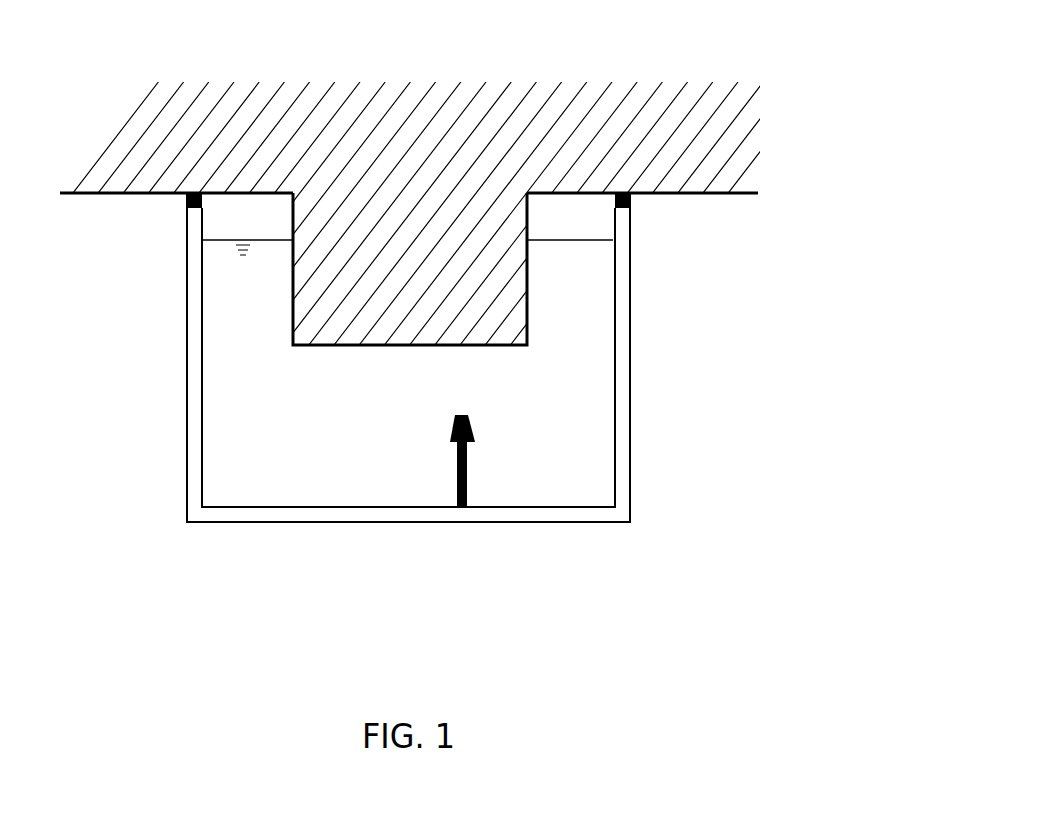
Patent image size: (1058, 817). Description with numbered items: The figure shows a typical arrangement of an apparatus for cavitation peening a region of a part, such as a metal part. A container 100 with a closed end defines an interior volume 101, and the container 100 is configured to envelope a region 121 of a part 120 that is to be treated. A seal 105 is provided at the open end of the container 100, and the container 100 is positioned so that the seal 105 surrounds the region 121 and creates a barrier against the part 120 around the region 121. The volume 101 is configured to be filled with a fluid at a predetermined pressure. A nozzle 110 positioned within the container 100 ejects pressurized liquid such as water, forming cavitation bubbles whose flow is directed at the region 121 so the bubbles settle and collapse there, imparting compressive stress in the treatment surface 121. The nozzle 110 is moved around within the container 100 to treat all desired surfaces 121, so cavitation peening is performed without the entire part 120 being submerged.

The container 100 is at (620, 408).
The interior volume 101 is at (604, 341).
The seal 105 is at (190, 200).
The nozzle 110 is at (450, 435).
The part 120 is at (727, 175).
The region 121 is at (357, 345).